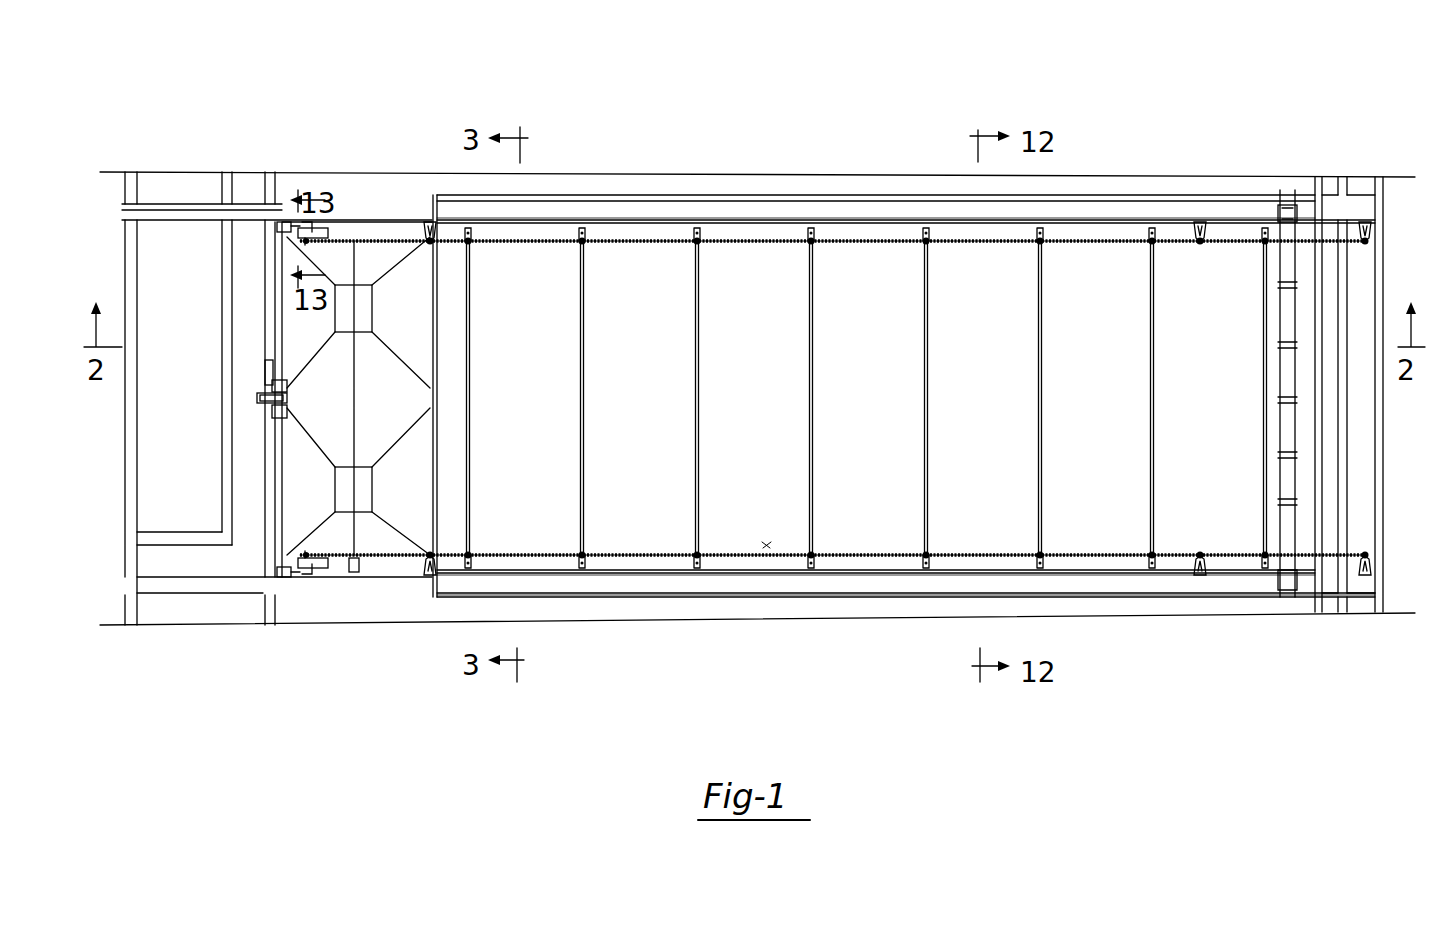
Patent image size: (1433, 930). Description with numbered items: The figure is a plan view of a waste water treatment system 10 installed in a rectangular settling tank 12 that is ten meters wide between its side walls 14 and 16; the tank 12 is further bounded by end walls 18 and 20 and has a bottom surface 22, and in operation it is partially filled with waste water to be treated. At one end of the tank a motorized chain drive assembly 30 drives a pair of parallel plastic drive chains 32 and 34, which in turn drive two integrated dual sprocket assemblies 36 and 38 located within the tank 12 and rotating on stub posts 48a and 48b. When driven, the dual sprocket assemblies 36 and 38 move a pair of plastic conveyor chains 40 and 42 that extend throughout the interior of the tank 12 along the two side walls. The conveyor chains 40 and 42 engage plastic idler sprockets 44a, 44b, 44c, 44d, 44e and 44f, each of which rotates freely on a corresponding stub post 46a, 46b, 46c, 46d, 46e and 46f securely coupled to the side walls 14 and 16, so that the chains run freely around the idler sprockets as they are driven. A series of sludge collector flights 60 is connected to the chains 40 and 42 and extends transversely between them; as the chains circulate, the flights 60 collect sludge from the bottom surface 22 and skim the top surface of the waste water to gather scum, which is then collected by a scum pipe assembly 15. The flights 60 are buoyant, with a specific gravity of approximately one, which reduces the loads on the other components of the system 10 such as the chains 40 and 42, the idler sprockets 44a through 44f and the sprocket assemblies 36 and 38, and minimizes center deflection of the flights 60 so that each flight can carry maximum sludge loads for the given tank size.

The waste water treatment system 10 is at (735, 124).
The rectangular settling tank 12 is at (624, 582).
The side wall 14 is at (851, 236).
The scum pipe assembly 15 is at (1291, 205).
The side wall 16 is at (893, 560).
The end wall 18 is at (1358, 457).
The end wall 20 is at (276, 470).
The bottom surface 22 is at (773, 535).
The motorized chain drive assembly 30 is at (240, 395).
The plastic drive chain 32 is at (283, 222).
The plastic drive chain 34 is at (288, 580).
The integrated dual sprocket assembly 36 is at (358, 396).
The integrated dual sprocket assembly 38 is at (348, 578).
The plastic conveyor chain 40 is at (610, 238).
The plastic conveyor chain 42 is at (668, 565).
The plastic idler sprocket 44a is at (440, 240).
The plastic idler sprocket 44b is at (1226, 258).
The plastic idler sprocket 44c is at (1362, 242).
The plastic idler sprocket 44d is at (1360, 552).
The plastic idler sprocket 44e is at (1200, 566).
The plastic idler sprocket 44f is at (432, 560).
The stub post 46a is at (426, 224).
The stub post 46b is at (1196, 225).
The stub post 46c is at (1364, 224).
The stub post 46d is at (1366, 576).
The stub post 46e is at (1205, 575).
The stub post 46f is at (425, 576).
The stub post 48a is at (336, 232).
The stub post 48b is at (318, 578).
The sludge collector flight 60 is at (712, 278).